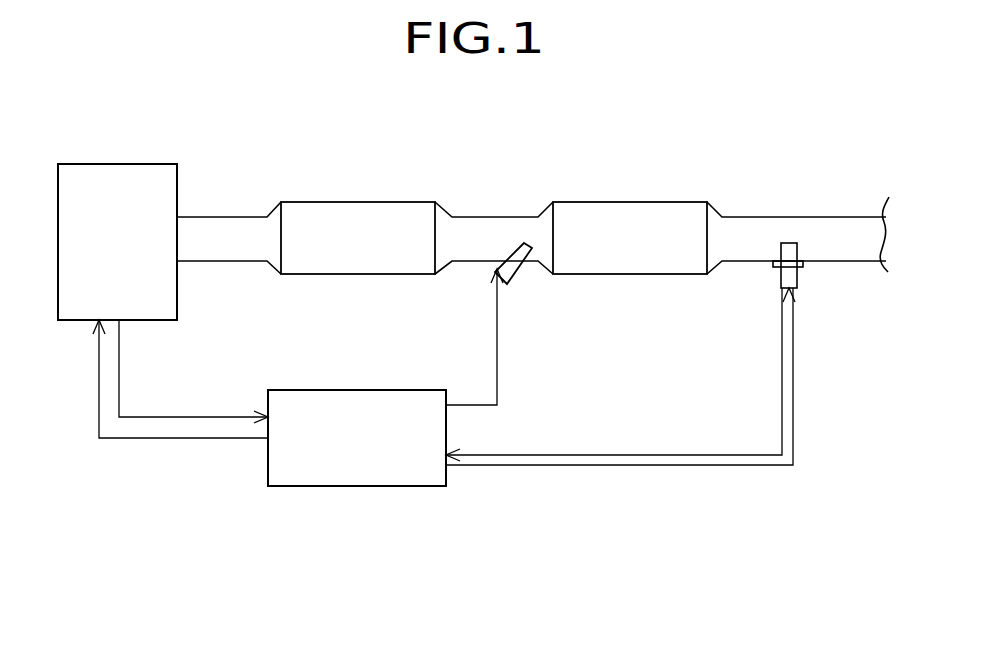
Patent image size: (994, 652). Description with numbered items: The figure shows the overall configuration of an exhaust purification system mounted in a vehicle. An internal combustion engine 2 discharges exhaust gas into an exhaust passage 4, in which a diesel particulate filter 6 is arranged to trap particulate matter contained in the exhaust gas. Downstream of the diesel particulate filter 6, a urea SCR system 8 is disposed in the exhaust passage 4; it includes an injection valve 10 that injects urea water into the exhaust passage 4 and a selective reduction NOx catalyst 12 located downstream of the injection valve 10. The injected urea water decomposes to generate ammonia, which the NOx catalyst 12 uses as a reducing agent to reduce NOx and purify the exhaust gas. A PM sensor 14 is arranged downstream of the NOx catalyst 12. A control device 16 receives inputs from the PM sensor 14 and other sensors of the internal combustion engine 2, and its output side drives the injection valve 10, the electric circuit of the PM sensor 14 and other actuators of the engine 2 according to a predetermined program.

The internal combustion engine 2 is at (108, 192).
The exhaust passage 4 is at (207, 230).
The diesel particulate filter 6 is at (355, 217).
The urea SCR system 8 is at (630, 332).
The injection valve 10 is at (518, 265).
The selective reduction NOx catalyst 12 is at (618, 253).
The PM sensor 14 is at (801, 265).
The control device 16 is at (360, 400).